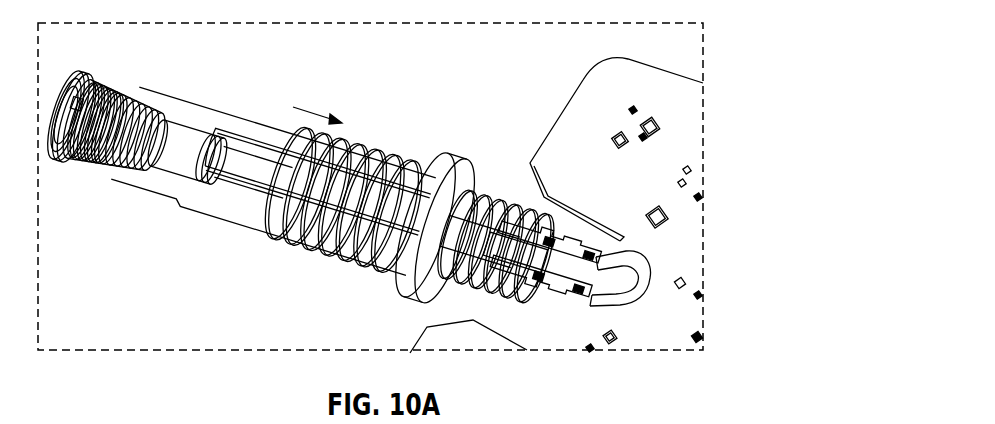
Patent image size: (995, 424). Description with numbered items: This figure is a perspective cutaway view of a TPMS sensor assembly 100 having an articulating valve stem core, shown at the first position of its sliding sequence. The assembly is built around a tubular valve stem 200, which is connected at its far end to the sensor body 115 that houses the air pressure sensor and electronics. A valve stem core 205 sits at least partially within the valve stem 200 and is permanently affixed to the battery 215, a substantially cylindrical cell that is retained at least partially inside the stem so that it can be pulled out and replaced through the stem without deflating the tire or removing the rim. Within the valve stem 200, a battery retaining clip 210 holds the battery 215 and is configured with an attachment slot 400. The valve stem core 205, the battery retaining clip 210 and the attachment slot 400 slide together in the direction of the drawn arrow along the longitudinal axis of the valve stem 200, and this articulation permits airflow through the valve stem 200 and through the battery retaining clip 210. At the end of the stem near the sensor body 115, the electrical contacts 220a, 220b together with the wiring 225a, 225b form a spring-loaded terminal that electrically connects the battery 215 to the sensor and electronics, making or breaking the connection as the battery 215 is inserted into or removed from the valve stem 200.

The TPMS sensor assembly 100 is at (318, 68).
The sensor body 115 is at (580, 97).
The valve stem 200 is at (110, 160).
The valve stem core 205 is at (180, 130).
The battery retaining clip 210 is at (237, 170).
The battery 215 is at (378, 253).
The electrical contact 220a is at (556, 250).
The electrical contact 220b is at (583, 290).
The wiring 225a is at (640, 255).
The wiring 225b is at (627, 303).
The attachment slot 400 is at (350, 143).